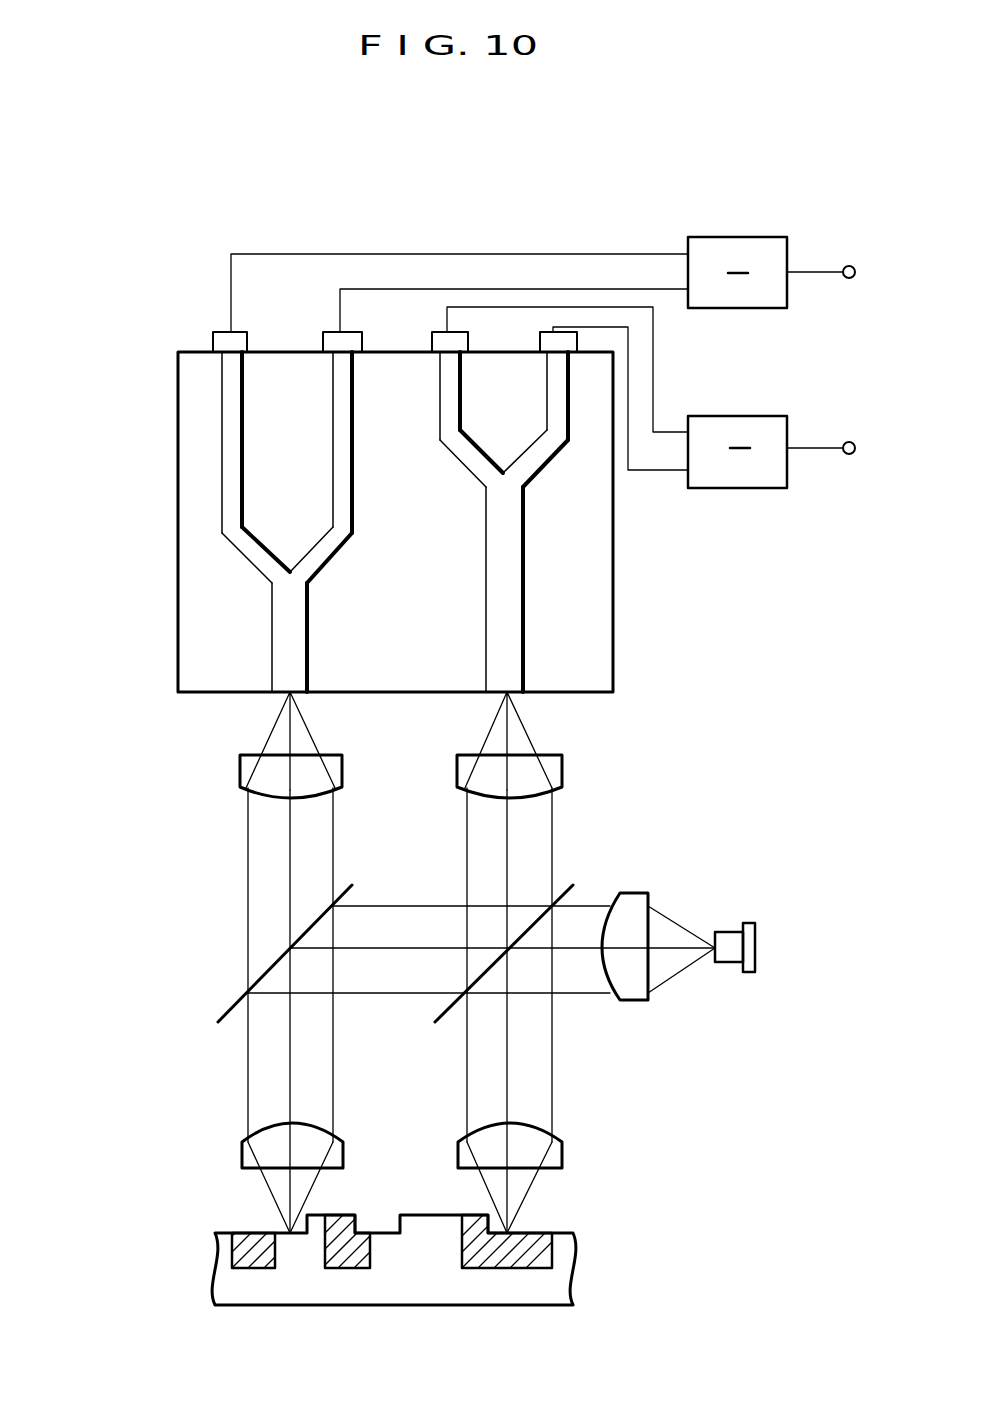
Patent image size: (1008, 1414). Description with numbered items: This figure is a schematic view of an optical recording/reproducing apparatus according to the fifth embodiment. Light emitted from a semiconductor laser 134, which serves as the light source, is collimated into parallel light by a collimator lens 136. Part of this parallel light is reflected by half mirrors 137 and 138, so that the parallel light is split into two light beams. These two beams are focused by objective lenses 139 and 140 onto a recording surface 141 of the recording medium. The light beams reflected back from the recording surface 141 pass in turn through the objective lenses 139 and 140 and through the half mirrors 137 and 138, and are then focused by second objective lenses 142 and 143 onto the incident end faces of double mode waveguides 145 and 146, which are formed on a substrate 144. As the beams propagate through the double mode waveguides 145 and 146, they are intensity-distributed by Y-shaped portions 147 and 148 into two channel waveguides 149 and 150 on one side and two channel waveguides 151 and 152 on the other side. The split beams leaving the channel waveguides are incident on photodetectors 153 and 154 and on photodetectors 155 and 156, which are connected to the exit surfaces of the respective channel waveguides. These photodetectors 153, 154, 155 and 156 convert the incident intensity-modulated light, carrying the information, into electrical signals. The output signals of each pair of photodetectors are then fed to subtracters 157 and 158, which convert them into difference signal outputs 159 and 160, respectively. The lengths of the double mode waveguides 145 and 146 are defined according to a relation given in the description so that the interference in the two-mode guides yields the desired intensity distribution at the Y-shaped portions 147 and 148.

The semiconductor laser 134 is at (730, 932).
The collimator lens 136 is at (643, 1000).
The half mirror 137 is at (236, 992).
The half mirror 138 is at (573, 885).
The objective lens 139 is at (340, 1150).
The objective lens 140 is at (555, 1155).
The recording surface 141 is at (590, 1250).
The second objective lens 142 is at (245, 768).
The second objective lens 143 is at (560, 766).
The substrate 144 is at (190, 666).
The double mode waveguide 145 is at (287, 657).
The double mode waveguide 146 is at (498, 657).
The Y-shaped portion 147 is at (290, 580).
The Y-shaped portion 148 is at (505, 485).
The channel waveguide 149 is at (230, 434).
The channel waveguide 150 is at (340, 432).
The channel waveguide 151 is at (448, 432).
The channel waveguide 152 is at (545, 440).
The photodetector 153 is at (215, 345).
The photodetector 154 is at (335, 340).
The photodetector 155 is at (440, 337).
The photodetector 156 is at (545, 341).
The subtracter 157 is at (718, 308).
The subtracter 158 is at (720, 488).
The difference signal output 159 is at (842, 285).
The difference signal output 160 is at (845, 462).